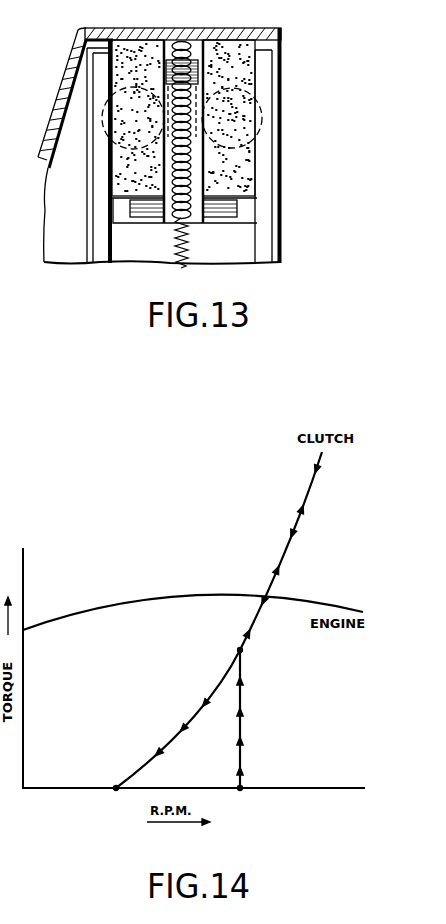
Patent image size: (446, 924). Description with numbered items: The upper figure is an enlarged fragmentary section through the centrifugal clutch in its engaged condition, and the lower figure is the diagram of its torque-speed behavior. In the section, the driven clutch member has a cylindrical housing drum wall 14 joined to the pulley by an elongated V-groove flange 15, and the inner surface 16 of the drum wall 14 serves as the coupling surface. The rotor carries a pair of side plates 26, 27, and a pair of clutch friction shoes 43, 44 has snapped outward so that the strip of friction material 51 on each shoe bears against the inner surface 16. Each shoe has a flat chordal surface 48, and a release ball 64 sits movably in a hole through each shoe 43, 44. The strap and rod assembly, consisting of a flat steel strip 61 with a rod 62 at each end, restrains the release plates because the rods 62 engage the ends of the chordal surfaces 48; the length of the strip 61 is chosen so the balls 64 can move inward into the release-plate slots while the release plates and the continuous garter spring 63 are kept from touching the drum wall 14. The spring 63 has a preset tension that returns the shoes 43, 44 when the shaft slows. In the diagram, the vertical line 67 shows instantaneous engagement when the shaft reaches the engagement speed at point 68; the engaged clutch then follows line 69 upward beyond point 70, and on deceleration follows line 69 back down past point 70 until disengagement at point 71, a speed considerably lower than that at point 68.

In FIG. 13, the housing drum wall 14 is at (233, 32).
In FIG. 13, the V-groove flange 15 is at (62, 102).
In FIG. 13, the inner surface 16 is at (113, 38).
In FIG. 13, the side plate 26 is at (100, 215).
In FIG. 13, the side plate 27 is at (262, 167).
In FIG. 13, the clutch friction shoe 43 is at (122, 68).
In FIG. 13, the clutch friction shoe 44 is at (237, 57).
In FIG. 13, the chordal surface 48 is at (238, 210).
In FIG. 13, the strip of friction material 51 is at (238, 78).
In FIG. 13, the steel strip 61 is at (173, 68).
In FIG. 13, the rod 62 is at (237, 213).
In FIG. 13, the garter spring 63 is at (156, 263).
In FIG. 13, the release ball 64 is at (103, 128).
In FIG. 14, the vertical line 67 is at (242, 750).
In FIG. 14, the clutch engagement speed point 68 is at (242, 790).
In FIG. 14, the torque-speed curve line 69 is at (289, 552).
In FIG. 14, the point on torque-speed curve 70 is at (243, 649).
In FIG. 14, the disengagement speed point 71 is at (117, 792).